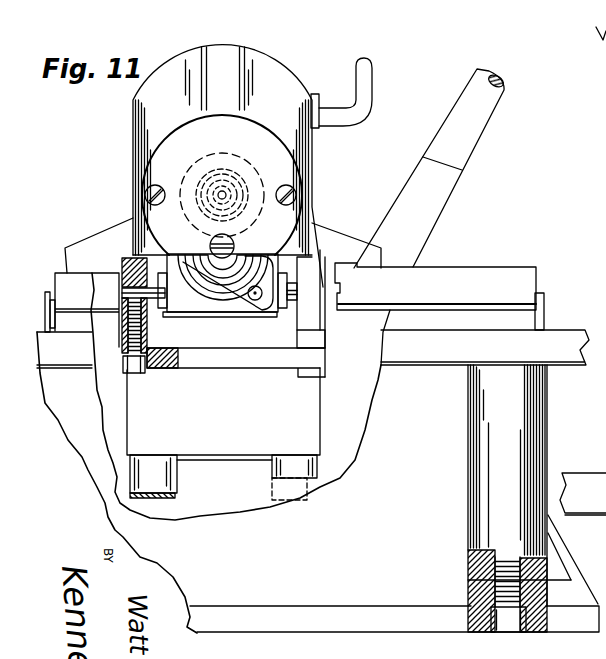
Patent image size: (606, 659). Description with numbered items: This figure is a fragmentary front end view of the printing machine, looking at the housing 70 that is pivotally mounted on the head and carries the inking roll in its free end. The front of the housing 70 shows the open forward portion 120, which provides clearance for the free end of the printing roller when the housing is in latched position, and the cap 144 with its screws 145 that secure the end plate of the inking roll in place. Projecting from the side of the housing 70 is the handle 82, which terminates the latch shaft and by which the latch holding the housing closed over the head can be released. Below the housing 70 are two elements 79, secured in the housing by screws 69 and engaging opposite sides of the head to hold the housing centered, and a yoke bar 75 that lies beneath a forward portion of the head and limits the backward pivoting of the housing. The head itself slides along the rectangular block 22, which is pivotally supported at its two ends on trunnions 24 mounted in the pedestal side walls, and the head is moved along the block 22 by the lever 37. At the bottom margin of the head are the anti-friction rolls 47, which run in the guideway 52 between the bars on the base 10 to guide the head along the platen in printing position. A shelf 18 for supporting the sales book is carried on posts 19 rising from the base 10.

The base 10 is at (390, 622).
The shelf 18 is at (58, 357).
The posts 19 is at (533, 498).
The rectangular block 22 is at (465, 275).
The trunnions 24 is at (48, 291).
The lever 37 is at (450, 122).
The anti-friction rolls 47 is at (290, 470).
The guideway 52 is at (272, 500).
The screws 69 is at (140, 376).
The housing 70 is at (146, 118).
The bar 75 is at (245, 362).
The elements 79 is at (270, 318).
The handle 82 is at (365, 85).
The open forward portion 120 is at (210, 240).
The cap 144 is at (286, 176).
The screws 145 is at (303, 207).